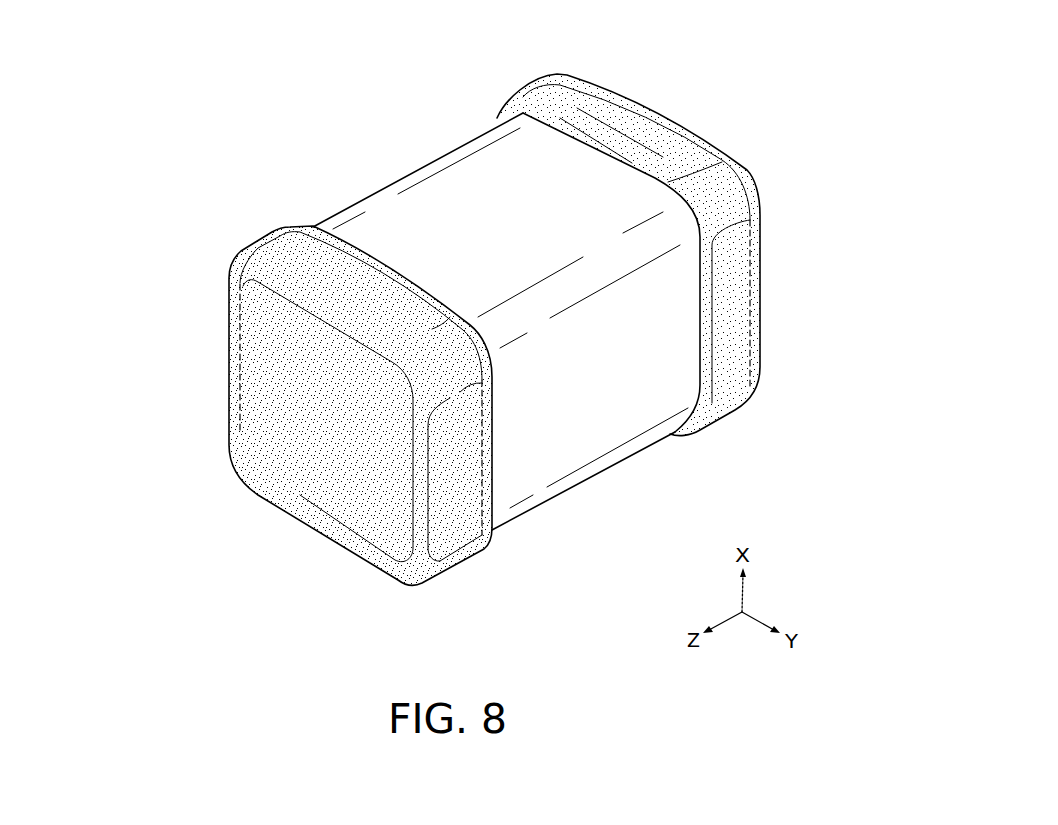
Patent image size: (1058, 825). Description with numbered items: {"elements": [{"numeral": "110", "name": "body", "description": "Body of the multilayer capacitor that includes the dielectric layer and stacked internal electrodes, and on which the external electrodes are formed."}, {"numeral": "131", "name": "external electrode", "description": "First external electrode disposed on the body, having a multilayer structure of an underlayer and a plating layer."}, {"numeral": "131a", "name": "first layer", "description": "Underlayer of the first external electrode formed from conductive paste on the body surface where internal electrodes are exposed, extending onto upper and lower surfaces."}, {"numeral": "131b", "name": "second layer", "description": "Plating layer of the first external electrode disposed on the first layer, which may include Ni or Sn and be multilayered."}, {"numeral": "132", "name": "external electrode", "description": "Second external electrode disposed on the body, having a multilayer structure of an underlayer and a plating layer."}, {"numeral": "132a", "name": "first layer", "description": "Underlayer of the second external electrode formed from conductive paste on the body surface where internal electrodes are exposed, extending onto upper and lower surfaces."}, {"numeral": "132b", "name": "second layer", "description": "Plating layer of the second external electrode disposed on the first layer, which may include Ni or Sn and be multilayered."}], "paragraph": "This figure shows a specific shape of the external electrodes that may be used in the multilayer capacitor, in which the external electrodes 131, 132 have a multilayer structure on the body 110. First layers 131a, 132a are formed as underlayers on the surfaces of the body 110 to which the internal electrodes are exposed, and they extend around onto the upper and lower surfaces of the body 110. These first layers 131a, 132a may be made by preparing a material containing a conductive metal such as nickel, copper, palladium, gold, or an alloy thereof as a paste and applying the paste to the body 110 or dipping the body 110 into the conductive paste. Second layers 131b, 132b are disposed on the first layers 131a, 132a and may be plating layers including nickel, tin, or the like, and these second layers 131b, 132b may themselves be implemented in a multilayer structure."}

The body 110 is at (434, 182).
The first external electrode 131 is at (295, 405).
The first electrode layer 131a is at (245, 382).
The first plating layer 131b is at (228, 345).
The second external electrode 132 is at (628, 220).
The second electrode layer 132a is at (722, 42).
The second plating layer 132b is at (683, 130).